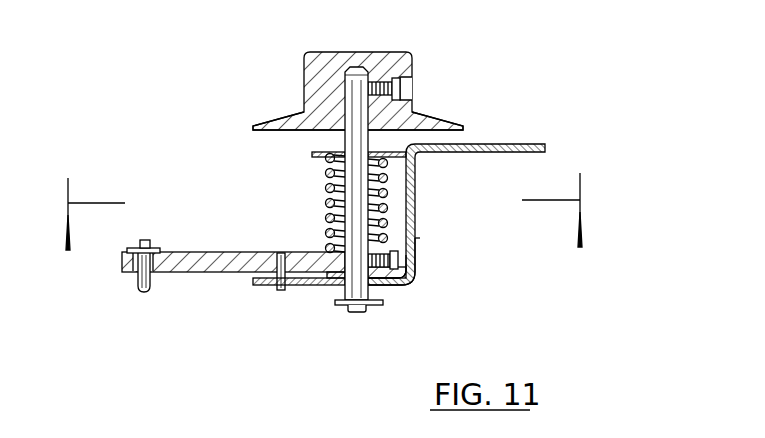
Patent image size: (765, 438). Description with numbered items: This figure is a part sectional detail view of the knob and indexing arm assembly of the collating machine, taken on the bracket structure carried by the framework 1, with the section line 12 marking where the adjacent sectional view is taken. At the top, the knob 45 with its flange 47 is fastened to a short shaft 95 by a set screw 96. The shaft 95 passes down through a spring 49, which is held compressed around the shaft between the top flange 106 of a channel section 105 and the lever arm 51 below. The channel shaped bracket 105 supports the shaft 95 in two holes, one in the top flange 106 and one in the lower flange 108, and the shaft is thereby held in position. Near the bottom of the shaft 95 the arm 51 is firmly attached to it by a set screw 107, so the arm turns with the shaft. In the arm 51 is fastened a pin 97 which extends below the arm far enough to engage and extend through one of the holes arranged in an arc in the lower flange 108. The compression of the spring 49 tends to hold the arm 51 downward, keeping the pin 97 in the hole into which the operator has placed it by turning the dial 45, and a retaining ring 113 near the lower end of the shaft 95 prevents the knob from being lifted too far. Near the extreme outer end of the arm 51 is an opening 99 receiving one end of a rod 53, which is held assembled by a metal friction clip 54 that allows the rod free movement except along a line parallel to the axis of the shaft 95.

The framework 1 is at (523, 150).
The section line 12- 12 is at (326, 205).
The knob 45 is at (306, 72).
The knob flange 47 is at (445, 122).
The spring 49 is at (330, 190).
The lever arm 51 is at (205, 257).
The rod 53 is at (147, 287).
The metal friction clip 54 is at (137, 250).
The short shaft 95 is at (353, 142).
The set screw 96 is at (404, 86).
The pin 97 is at (282, 253).
The opening 99 is at (143, 273).
The channel section 105 is at (407, 282).
The top flange 106 is at (312, 154).
The set screw 107 is at (397, 258).
The lower flange 108 is at (314, 287).
The retaining ring 113 is at (377, 304).